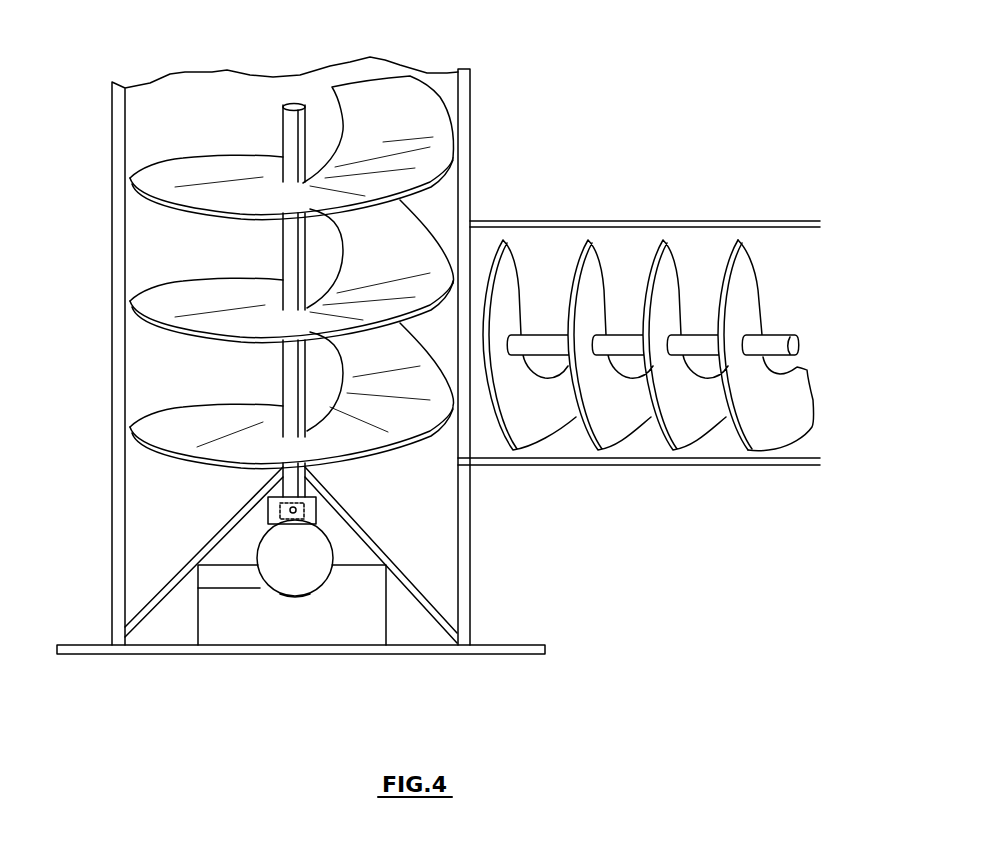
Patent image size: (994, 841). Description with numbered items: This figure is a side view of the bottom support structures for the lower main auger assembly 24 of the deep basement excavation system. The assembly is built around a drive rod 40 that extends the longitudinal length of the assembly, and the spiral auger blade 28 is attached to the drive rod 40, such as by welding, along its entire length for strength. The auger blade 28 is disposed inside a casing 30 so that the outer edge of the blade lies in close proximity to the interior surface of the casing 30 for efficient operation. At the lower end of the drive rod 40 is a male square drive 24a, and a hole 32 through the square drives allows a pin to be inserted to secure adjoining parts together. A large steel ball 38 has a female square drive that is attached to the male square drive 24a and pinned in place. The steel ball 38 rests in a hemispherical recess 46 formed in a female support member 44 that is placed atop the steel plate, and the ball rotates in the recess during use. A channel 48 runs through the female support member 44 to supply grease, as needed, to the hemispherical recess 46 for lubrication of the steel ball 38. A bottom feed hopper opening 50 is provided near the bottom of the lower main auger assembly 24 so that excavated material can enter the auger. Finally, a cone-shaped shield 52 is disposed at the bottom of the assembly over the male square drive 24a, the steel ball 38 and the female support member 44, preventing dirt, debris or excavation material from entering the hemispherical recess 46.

The lower main auger assembly 24 is at (452, 90).
The male square drive 24a is at (268, 503).
The auger blade 28 is at (398, 250).
The casing 30 is at (118, 517).
The hole 32 is at (316, 507).
The steel ball 38 is at (308, 567).
The drive rod 40 is at (288, 130).
The female support member 44 is at (382, 622).
The hemispherical recess 46 is at (296, 598).
The channel 48 is at (232, 590).
The bottom feed hopper opening 50 is at (458, 242).
The cone-shaped shield 52 is at (166, 582).